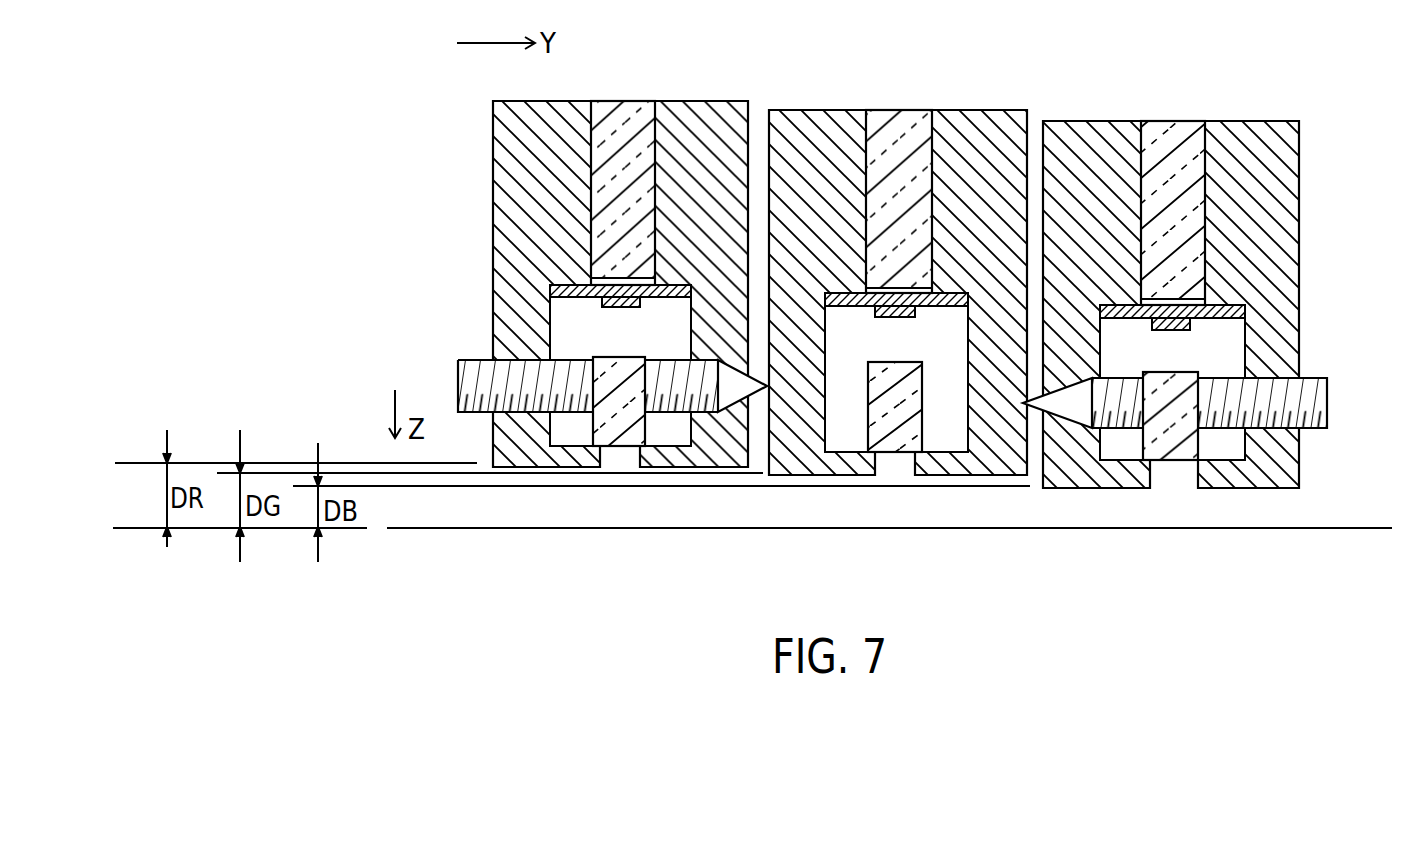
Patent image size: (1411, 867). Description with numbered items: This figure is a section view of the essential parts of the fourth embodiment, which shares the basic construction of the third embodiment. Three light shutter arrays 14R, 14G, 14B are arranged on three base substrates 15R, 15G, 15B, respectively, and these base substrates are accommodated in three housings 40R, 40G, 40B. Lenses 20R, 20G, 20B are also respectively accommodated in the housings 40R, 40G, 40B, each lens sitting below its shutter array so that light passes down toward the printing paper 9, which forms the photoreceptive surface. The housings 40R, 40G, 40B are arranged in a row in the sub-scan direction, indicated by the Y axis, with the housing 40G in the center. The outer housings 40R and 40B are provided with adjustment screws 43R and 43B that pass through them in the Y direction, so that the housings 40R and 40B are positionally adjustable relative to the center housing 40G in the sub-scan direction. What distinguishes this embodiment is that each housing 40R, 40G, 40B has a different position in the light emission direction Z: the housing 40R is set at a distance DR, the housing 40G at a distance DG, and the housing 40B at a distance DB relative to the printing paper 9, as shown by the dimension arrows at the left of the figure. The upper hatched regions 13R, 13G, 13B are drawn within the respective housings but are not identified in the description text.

The red pixel light-emitting region 13R is at (627, 101).
The green pixel light-emitting region 13G is at (893, 110).
The blue pixel light-emitting region 13B is at (1168, 121).
The housing 40R is at (718, 101).
The housing 40G is at (988, 110).
The housing 40B is at (1270, 121).
The base substrate 15R is at (580, 298).
The base substrate 15G is at (862, 307).
The base substrate 15B is at (1135, 322).
The light shutter array 14R is at (633, 307).
The light shutter array 14G is at (908, 318).
The light shutter array 14B is at (1188, 330).
The lens 20R is at (623, 446).
The lens 20G is at (897, 452).
The lens 20B is at (1173, 460).
The adjustment screw 43R is at (468, 360).
The adjustment screw 43B is at (1323, 378).
The printing paper 9 is at (1355, 528).